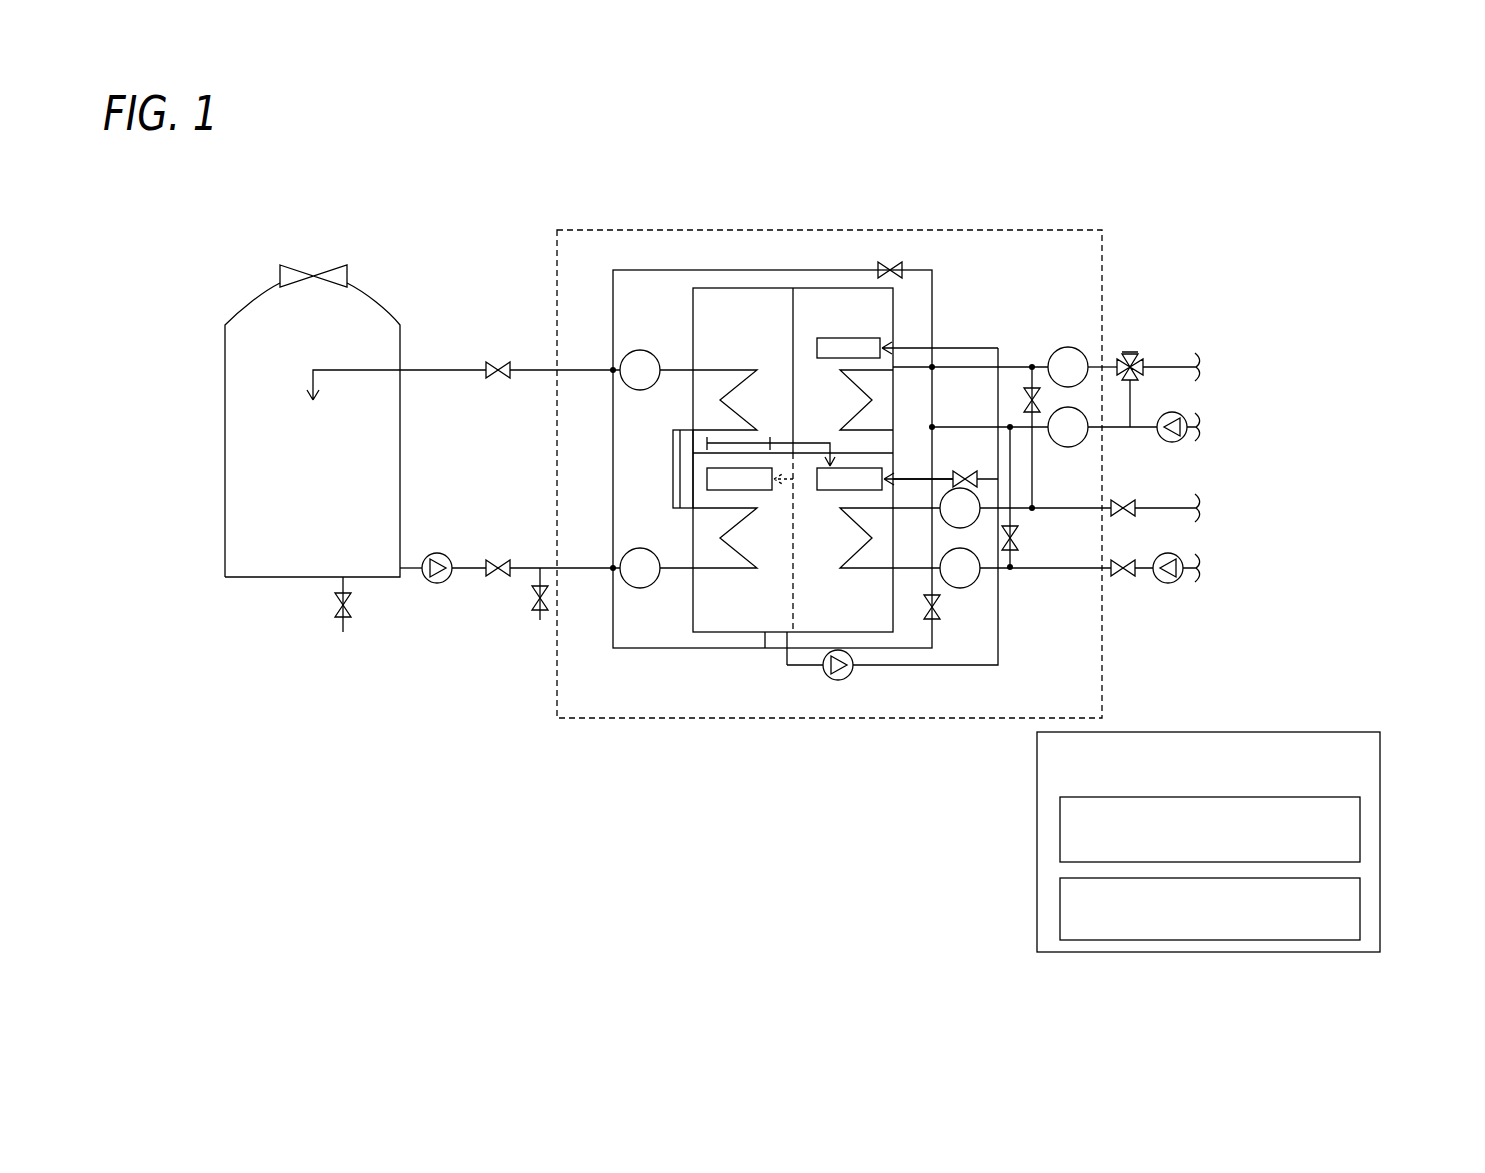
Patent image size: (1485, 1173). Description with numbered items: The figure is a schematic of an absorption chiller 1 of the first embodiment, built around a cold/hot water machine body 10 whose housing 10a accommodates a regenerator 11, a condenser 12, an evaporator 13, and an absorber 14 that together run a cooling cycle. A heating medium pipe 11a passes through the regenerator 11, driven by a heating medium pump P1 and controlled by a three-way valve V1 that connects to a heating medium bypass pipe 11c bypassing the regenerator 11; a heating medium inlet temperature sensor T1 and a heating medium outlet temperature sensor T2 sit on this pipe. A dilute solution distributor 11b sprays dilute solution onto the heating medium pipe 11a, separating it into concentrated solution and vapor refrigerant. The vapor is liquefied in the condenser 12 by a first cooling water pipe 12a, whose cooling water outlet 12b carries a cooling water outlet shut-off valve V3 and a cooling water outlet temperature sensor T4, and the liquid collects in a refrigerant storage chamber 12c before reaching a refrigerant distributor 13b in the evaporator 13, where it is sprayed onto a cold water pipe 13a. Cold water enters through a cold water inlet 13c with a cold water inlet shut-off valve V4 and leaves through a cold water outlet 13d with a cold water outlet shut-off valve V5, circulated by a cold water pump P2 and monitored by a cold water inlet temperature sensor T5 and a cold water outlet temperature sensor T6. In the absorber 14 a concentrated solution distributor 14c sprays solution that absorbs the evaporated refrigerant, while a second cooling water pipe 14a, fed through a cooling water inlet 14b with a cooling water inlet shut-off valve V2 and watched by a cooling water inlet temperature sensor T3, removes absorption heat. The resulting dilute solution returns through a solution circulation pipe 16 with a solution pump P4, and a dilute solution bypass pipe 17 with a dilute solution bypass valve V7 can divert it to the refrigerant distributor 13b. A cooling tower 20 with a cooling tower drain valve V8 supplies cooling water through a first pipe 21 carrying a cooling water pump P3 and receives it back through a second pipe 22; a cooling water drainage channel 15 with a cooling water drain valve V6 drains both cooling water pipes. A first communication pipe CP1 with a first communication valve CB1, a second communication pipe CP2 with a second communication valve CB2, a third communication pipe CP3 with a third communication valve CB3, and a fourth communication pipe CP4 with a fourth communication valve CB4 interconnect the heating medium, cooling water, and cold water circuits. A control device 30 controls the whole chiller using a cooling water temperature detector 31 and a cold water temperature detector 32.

The absorption chiller 1 is at (1281, 194).
The cold/hot water machine body 10 is at (557, 230).
The housing 10a is at (765, 641).
The regenerator 11 is at (816, 287).
The heating medium pipe 11a is at (1195, 352).
The dilute solution distributor 11b is at (895, 347).
The heating medium bypass pipe 11c is at (1130, 390).
The condenser 12 is at (729, 297).
The first cooling water pipe 12a is at (598, 369).
The cooling water outlet 12b is at (517, 377).
The refrigerant storage chamber 12c is at (673, 440).
The evaporator 13 is at (877, 583).
The cold water pipe 13a is at (975, 581).
The refrigerant distributor 13b is at (822, 492).
The cold water inlet 13c is at (1104, 568).
The cold water outlet 13d is at (1093, 512).
The absorber 14 is at (714, 582).
The second cooling water pipe 14a is at (597, 572).
The cooling water inlet 14b is at (518, 562).
The concentrated solution distributor 14c is at (673, 480).
The cooling water drainage channel 15 is at (540, 621).
The solution circulation pipe 16 is at (875, 666).
The dilute solution bypass pipe 17 is at (905, 477).
The cooling tower 20 is at (265, 295).
The first pipe 21 is at (463, 568).
The second pipe 22 is at (408, 372).
The control device 30 is at (1380, 747).
The cooling water temperature detector 31 is at (1360, 838).
The cold water temperature detector 32 is at (1360, 895).
The first communication pipe CP1 is at (712, 649).
The second communication pipe CP2 is at (857, 268).
The third communication pipe CP3 is at (1013, 497).
The fourth communication pipe CP4 is at (1030, 380).
The first communication valve CB1 is at (952, 605).
The second communication valve CB2 is at (878, 254).
The third communication valve CB3 is at (1031, 545).
The fourth communication valve CB4 is at (1026, 400).
The three-way valve V1 is at (1125, 373).
The cooling water inlet shut-off valve V2 is at (497, 553).
The cooling water outlet shut-off valve V3 is at (497, 355).
The cold water inlet shut-off valve V4 is at (1121, 583).
The cold water outlet shut-off valve V5 is at (1121, 494).
The cooling water drain valve V6 is at (526, 594).
The dilute solution bypass valve V7 is at (965, 464).
The cooling tower drain valve V8 is at (330, 604).
The heating medium pump P1 is at (1172, 441).
The cold water pump P2 is at (1168, 583).
The cooling water pump P3 is at (437, 582).
The solution pump P4 is at (838, 679).
The heating medium inlet temperature sensor T1 is at (1068, 427).
The heating medium outlet temperature sensor T2 is at (1068, 367).
The cooling water inlet temperature sensor T3 is at (640, 568).
The cooling water outlet temperature sensor T4 is at (640, 370).
The cold water inlet temperature sensor T5 is at (960, 568).
The cold water outlet temperature sensor T6 is at (960, 508).